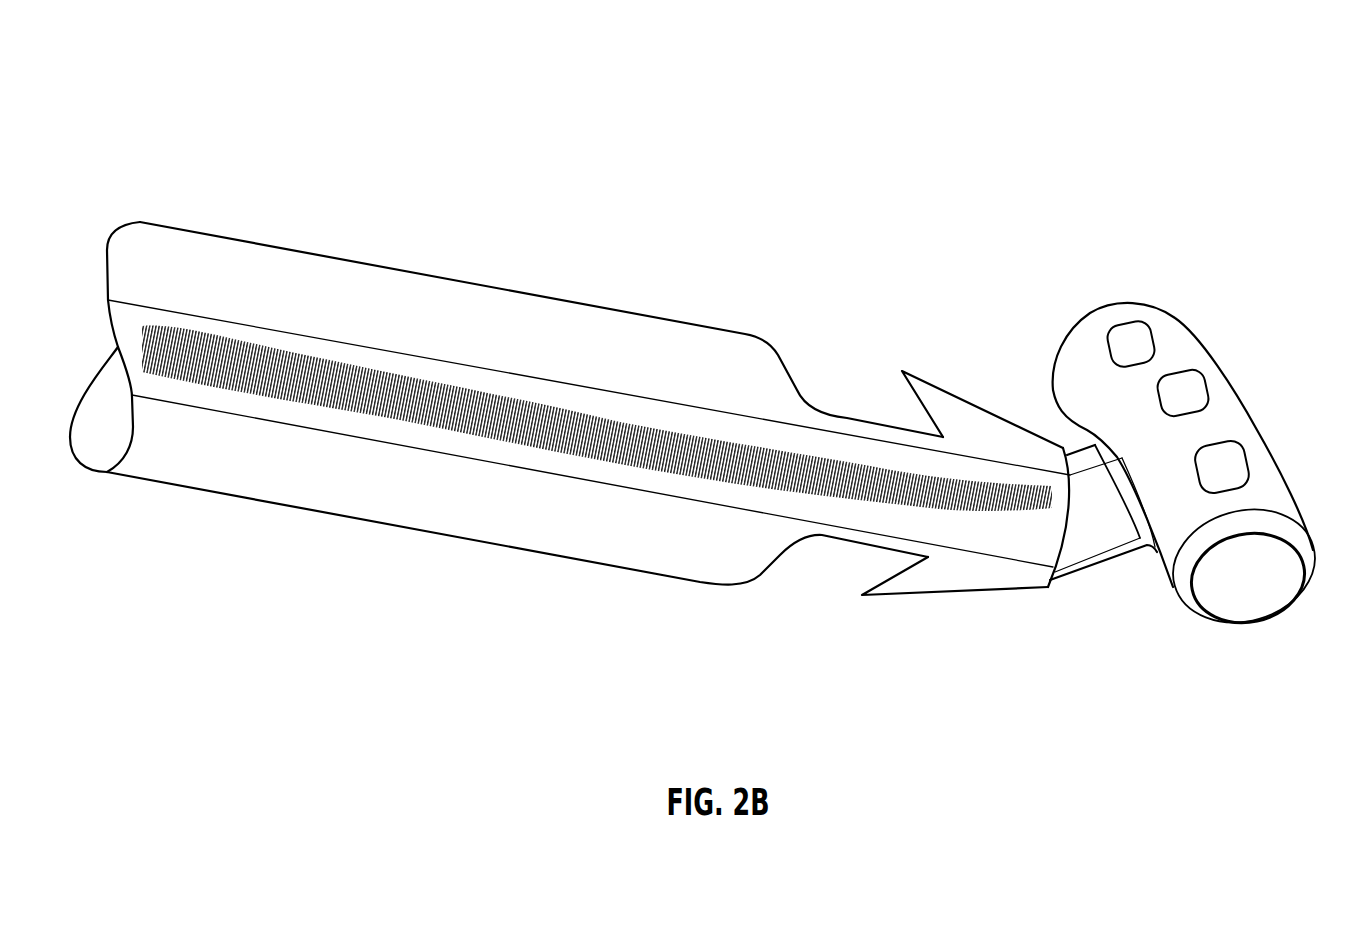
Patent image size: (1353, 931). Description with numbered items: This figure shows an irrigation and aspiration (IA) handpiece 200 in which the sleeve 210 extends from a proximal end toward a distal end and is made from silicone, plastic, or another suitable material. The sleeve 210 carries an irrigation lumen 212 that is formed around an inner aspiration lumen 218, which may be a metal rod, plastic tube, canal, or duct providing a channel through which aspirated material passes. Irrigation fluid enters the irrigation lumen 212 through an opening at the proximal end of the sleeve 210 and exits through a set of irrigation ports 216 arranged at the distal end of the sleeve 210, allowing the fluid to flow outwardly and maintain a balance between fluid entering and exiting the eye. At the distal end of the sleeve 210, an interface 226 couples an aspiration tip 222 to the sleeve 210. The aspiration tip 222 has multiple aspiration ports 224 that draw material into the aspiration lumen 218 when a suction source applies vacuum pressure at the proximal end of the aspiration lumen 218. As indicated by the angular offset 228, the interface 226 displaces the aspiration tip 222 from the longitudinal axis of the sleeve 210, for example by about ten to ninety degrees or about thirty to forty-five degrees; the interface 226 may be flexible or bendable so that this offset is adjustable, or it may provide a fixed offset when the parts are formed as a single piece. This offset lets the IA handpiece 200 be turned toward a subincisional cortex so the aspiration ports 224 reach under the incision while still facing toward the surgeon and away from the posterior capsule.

The IA handpiece 200 is at (187, 91).
The sleeve 210 is at (417, 532).
The irrigation lumen 212 is at (327, 268).
The irrigation ports 216 is at (820, 360).
The aspiration lumen 218 is at (215, 328).
The aspiration tip 222 is at (1247, 623).
The aspiration ports 224 is at (1140, 333).
The interface 226 is at (1050, 583).
The angular offset 228 is at (1063, 448).